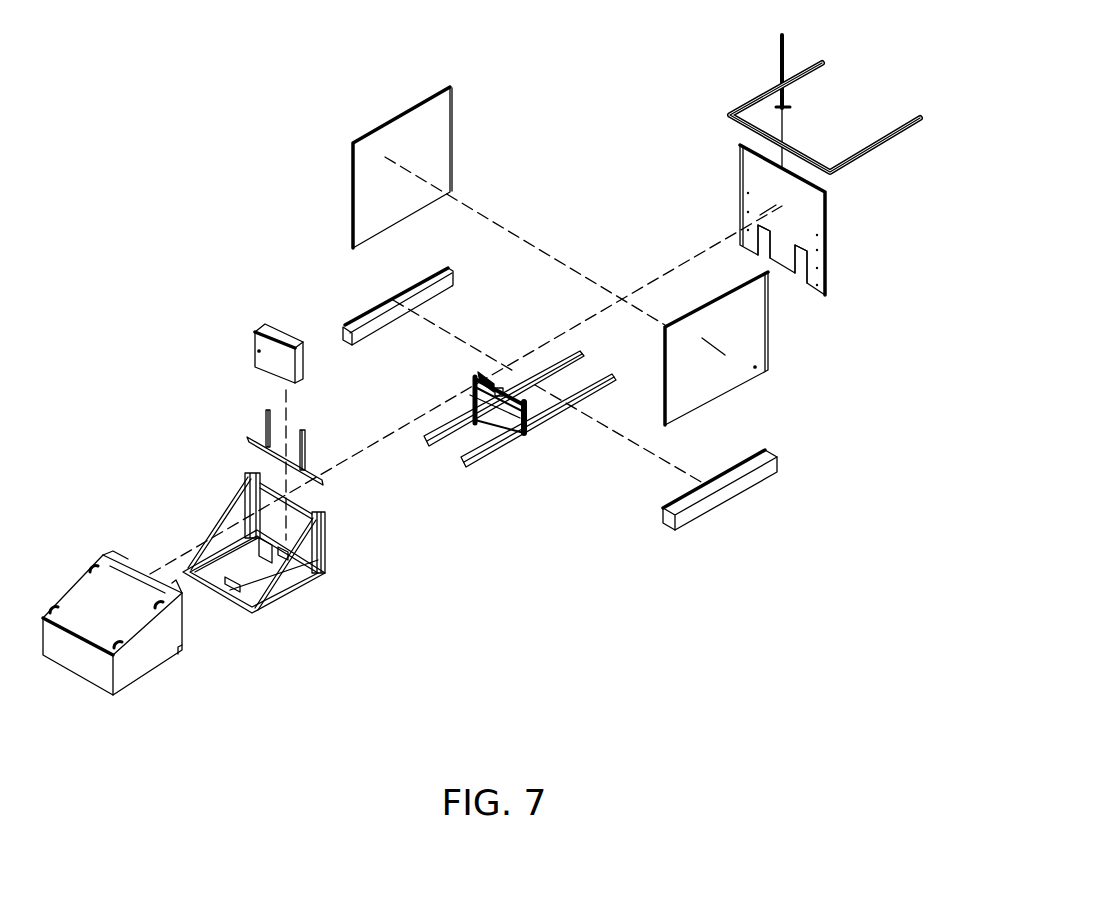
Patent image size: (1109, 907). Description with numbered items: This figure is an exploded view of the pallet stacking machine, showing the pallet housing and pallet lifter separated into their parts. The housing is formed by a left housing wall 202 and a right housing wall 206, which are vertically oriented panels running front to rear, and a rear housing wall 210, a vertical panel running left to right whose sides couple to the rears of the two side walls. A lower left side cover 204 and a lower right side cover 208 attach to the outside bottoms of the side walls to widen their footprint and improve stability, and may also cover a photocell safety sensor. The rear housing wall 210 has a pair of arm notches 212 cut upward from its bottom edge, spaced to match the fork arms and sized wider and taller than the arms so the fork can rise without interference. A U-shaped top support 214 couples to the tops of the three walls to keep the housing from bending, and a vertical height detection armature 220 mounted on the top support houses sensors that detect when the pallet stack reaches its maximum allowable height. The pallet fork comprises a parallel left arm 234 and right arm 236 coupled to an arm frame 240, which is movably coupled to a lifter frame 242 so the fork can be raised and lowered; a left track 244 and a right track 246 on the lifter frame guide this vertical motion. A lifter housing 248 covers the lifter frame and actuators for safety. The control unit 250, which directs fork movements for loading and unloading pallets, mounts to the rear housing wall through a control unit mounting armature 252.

The left housing wall 202 is at (722, 397).
The lower left side cover 204 is at (727, 493).
The right housing wall 206 is at (407, 110).
The lower right side cover 208 is at (356, 318).
The rear housing wall 210 is at (738, 170).
The pair of arm notches 212 is at (797, 256).
The top support 214 is at (900, 138).
The height detection armature 220 is at (786, 45).
The left arm 234 is at (600, 393).
The right arm 236 is at (556, 362).
The arm frame 240 is at (537, 410).
The lifter frame 242 is at (273, 612).
The left track 244 is at (323, 557).
The right track 246 is at (271, 575).
The lifter housing 248 is at (145, 668).
The control unit 250 is at (258, 330).
The control unit mounting armature 252 is at (265, 424).